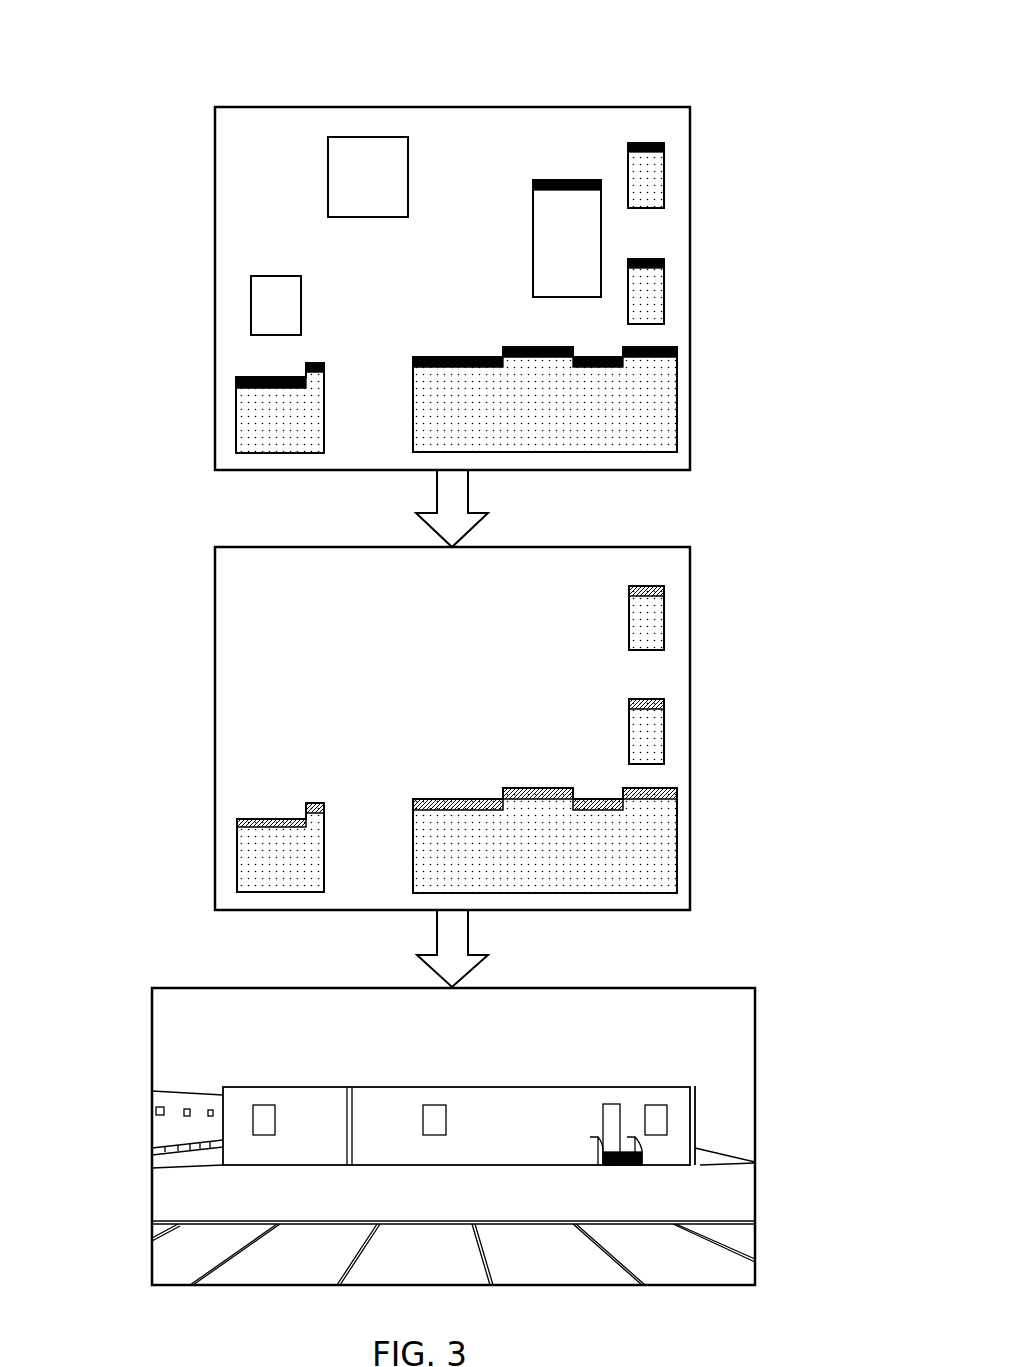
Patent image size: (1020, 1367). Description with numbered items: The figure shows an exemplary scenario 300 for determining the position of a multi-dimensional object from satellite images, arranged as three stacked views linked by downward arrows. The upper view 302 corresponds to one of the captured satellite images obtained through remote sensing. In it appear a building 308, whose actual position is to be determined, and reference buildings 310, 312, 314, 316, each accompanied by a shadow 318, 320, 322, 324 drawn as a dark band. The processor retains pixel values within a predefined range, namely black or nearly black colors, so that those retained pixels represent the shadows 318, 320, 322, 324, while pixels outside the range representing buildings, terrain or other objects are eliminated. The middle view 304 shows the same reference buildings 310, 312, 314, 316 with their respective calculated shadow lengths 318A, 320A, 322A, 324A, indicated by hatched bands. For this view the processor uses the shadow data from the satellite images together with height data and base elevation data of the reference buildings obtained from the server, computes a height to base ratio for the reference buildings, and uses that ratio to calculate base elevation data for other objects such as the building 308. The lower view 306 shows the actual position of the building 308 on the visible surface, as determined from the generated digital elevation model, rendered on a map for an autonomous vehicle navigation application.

The process of generating a rendered image 300 is at (147, 68).
The view 302 is at (213, 121).
The view 304 is at (213, 560).
The view 306 is at (152, 1004).
The building 308 is at (601, 232).
The reference building 310 is at (657, 199).
The reference building 312 is at (657, 308).
The reference building 314 is at (668, 400).
The reference building 316 is at (243, 428).
The shadow 318 is at (665, 147).
The calculated shadow length 318A is at (665, 591).
The shadow 320 is at (665, 262).
The calculated shadow length 320A is at (665, 700).
The shadow 322 is at (678, 351).
The calculated shadow length 322A is at (678, 792).
The shadow 324 is at (236, 381).
The calculated shadow length 324A is at (237, 822).